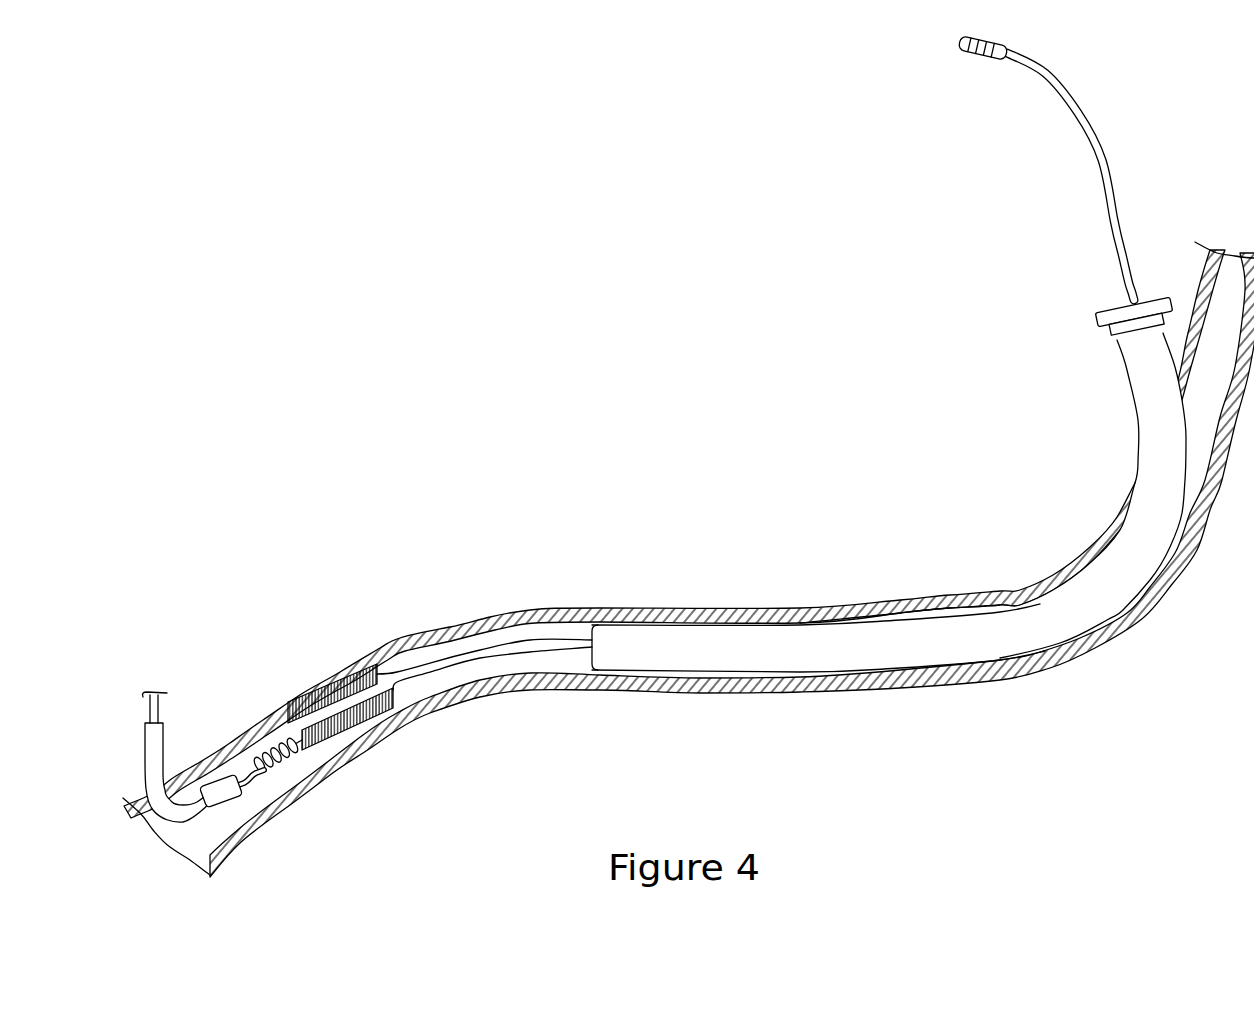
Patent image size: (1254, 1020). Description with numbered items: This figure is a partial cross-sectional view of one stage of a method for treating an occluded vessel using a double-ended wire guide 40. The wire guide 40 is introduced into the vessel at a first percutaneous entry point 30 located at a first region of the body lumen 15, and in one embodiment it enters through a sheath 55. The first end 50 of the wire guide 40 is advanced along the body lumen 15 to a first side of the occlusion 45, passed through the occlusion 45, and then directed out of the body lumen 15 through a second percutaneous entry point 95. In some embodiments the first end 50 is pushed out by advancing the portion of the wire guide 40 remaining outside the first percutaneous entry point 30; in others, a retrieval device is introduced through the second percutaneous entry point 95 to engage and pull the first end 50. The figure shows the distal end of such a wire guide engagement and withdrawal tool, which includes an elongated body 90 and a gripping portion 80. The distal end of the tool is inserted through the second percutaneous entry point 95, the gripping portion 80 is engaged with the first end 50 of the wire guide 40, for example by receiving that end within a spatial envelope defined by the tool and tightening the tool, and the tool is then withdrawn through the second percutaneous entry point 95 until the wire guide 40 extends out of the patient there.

The body lumen 15 is at (490, 670).
The first percutaneous entry point 30 is at (1125, 470).
The wire guide 40 is at (1098, 187).
The occlusion 45 is at (337, 670).
The first end 50 is at (256, 762).
The sheath 55 is at (775, 648).
The gripping portion 80 is at (272, 779).
The elongated body 90 is at (225, 805).
The second percutaneous entry point 95 is at (143, 793).